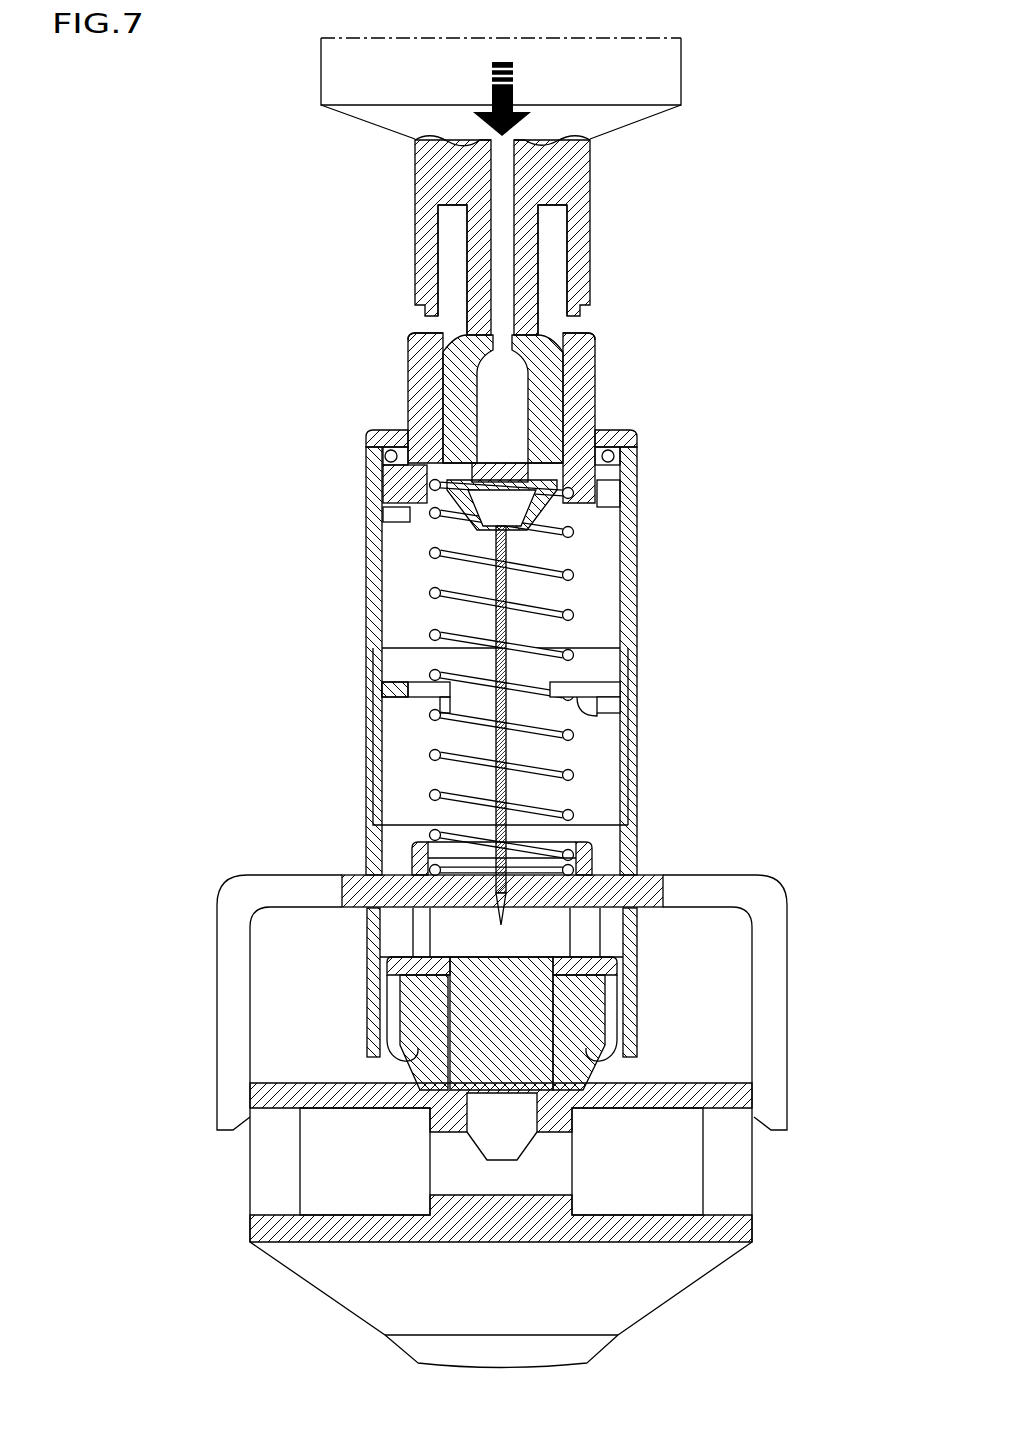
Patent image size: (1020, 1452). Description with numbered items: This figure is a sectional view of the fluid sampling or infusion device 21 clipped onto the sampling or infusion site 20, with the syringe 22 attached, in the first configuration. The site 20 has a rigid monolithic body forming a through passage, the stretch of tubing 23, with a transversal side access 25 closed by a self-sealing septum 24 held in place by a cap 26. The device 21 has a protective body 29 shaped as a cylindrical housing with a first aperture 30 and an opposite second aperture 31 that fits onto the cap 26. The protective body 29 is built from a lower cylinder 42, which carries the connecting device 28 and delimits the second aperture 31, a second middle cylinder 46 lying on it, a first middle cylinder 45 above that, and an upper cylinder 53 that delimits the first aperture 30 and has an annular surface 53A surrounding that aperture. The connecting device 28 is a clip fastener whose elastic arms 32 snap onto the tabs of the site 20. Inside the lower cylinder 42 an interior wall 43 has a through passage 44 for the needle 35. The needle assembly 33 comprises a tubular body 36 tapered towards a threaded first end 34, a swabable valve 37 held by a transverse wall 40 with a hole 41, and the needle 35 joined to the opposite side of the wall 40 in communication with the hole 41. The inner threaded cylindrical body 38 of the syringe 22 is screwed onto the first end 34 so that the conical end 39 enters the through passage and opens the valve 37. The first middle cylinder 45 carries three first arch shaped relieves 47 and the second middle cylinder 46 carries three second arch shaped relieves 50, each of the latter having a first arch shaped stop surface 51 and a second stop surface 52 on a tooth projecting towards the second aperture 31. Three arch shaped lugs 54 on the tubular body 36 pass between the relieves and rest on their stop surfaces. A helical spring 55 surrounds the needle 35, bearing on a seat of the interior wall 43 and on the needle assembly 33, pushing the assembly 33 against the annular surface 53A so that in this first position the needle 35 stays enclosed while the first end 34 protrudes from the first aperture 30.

The sampling or infusion site 20 is at (709, 1316).
The fluid sampling or infusion device 21 is at (743, 601).
The syringe 22 is at (617, 151).
The stretch of tubing 23 is at (752, 1242).
The septum 24 is at (510, 1030).
The side access 25 is at (520, 1120).
The cap 26 is at (605, 1023).
The connecting device 28 is at (800, 882).
The protective body 29 is at (653, 587).
The first aperture 30 is at (595, 410).
The second aperture 31 is at (405, 1060).
The elastic arms 32 is at (232, 980).
The needle assembly 33 is at (370, 359).
The first end 34 is at (560, 270).
The needle 35 is at (510, 747).
The tubular body 36 is at (610, 333).
The valve 37 is at (455, 352).
The inner threaded cylindrical body 38 is at (428, 222).
The conical end 39 is at (458, 283).
The transverse wall 40 is at (445, 468).
The hole 41 is at (455, 470).
The lower cylinder 42 is at (655, 932).
The interior wall 43 is at (445, 885).
The through passage 44 is at (590, 870).
The first middle cylinder 45 is at (653, 534).
The second middle cylinder 46 is at (351, 692).
The first arch shaped relieves 47 is at (397, 526).
The second arch shaped relieves 50 is at (388, 673).
The first arch shaped stop surface 51 is at (432, 705).
The second stop surface 52 is at (428, 715).
The upper cylinder 53 is at (631, 424).
The annular surface 53A is at (385, 456).
The arch shaped lugs 54 is at (405, 470).
The helical spring 55 is at (570, 607).